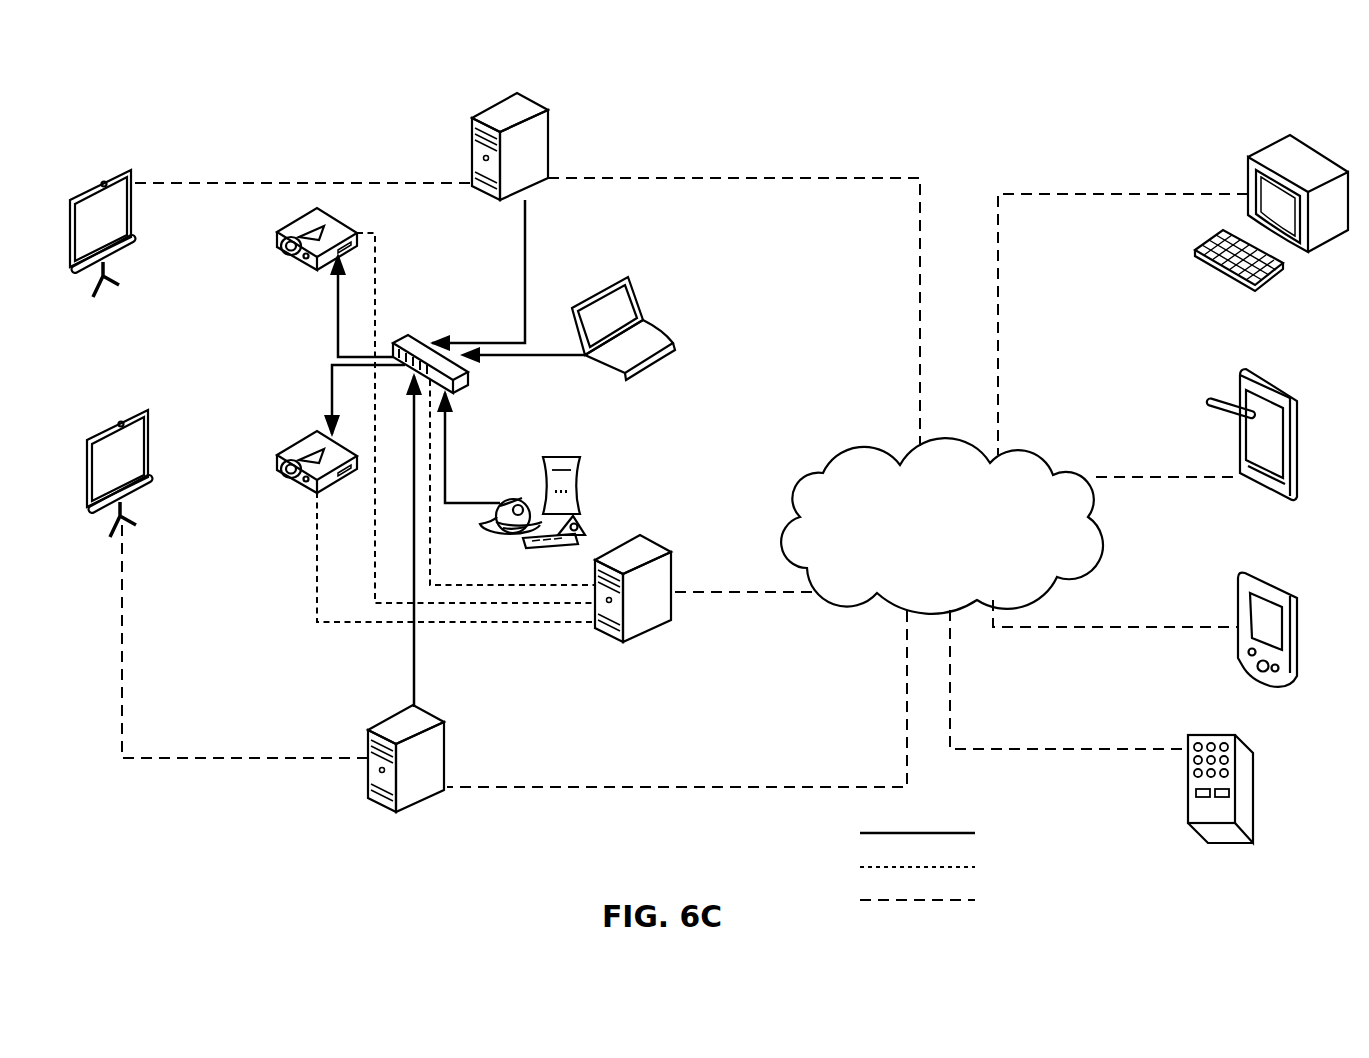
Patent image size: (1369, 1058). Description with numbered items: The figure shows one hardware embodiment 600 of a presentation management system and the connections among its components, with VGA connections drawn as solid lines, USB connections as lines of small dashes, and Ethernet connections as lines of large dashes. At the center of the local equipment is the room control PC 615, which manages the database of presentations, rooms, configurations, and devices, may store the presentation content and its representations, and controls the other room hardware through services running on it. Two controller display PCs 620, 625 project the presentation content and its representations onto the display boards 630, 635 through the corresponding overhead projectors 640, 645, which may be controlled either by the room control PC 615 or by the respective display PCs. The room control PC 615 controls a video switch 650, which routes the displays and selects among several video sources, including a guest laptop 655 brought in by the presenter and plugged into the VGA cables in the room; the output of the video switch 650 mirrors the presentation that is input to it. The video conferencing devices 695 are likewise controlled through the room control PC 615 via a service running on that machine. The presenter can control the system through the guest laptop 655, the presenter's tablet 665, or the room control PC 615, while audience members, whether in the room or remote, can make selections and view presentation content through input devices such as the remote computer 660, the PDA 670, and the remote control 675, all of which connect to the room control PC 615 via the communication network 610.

The hardware embodiment of the system 600 is at (183, 61).
The communication network 610 is at (1020, 450).
The room control PC 615 is at (633, 535).
The display PC 1 620 is at (522, 95).
The display PC 2 625 is at (433, 710).
The display board 630 is at (129, 170).
The display board 635 is at (142, 408).
The projector 1 640 is at (288, 223).
The projector 2 645 is at (290, 442).
The video switch 650 is at (407, 336).
The guest laptop 655 is at (653, 317).
The remote computer 660 is at (1290, 135).
The presenter's tablet 665 is at (1290, 393).
The personal digital assistant (PDA) 670 is at (1293, 583).
The remote control 675 is at (1202, 733).
The video conferencing devices 695 is at (567, 455).